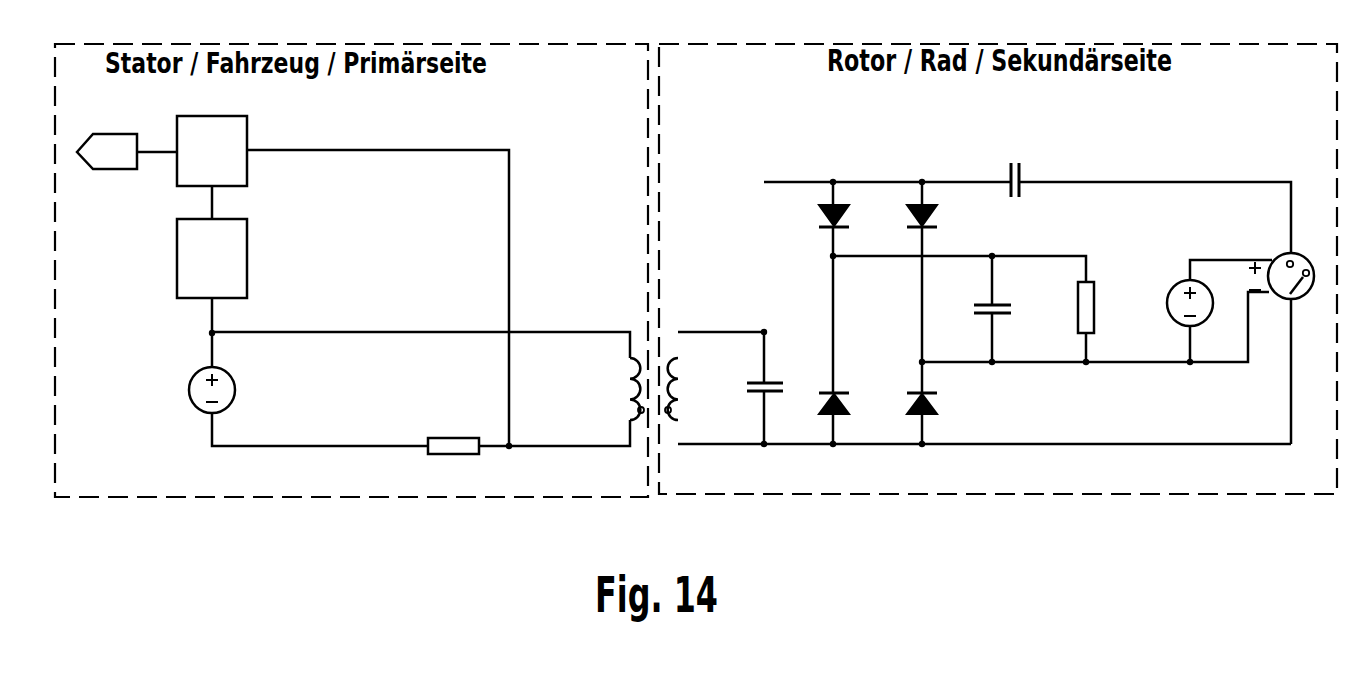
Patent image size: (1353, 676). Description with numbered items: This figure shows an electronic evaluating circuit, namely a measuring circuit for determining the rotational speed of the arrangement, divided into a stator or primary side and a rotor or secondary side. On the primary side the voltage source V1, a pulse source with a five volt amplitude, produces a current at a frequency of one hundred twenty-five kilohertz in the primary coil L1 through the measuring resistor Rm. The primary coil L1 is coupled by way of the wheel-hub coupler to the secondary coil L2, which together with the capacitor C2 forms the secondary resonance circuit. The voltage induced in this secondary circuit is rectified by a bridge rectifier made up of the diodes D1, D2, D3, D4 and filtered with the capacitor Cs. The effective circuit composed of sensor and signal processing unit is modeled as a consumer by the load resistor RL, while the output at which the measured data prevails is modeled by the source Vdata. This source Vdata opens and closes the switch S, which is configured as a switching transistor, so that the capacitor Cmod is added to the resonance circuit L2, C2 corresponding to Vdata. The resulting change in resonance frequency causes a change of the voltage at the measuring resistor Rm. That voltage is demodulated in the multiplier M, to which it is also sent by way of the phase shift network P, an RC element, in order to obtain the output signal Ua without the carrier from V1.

The output signal Ua is at (107, 152).
The multiplier M is at (212, 151).
The phase shift network P is at (212, 258).
The voltage source V1 is at (258, 392).
The measuring resistor Rm is at (453, 446).
The primary coil L1 is at (597, 390).
The secondary coil L2 is at (711, 390).
The secondary capacitor C2 is at (780, 389).
The bridge rectifier diode D1 is at (851, 218).
The bridge rectifier diode D2 is at (941, 406).
The bridge rectifier diode D3 is at (854, 406).
The bridge rectifier diode D4 is at (940, 218).
The modulation capacitor Cmod is at (1015, 183).
The filter capacitor Cs is at (970, 313).
The load resistor RL is at (1061, 310).
The data source Vdata is at (1163, 287).
The switch S is at (1281, 260).